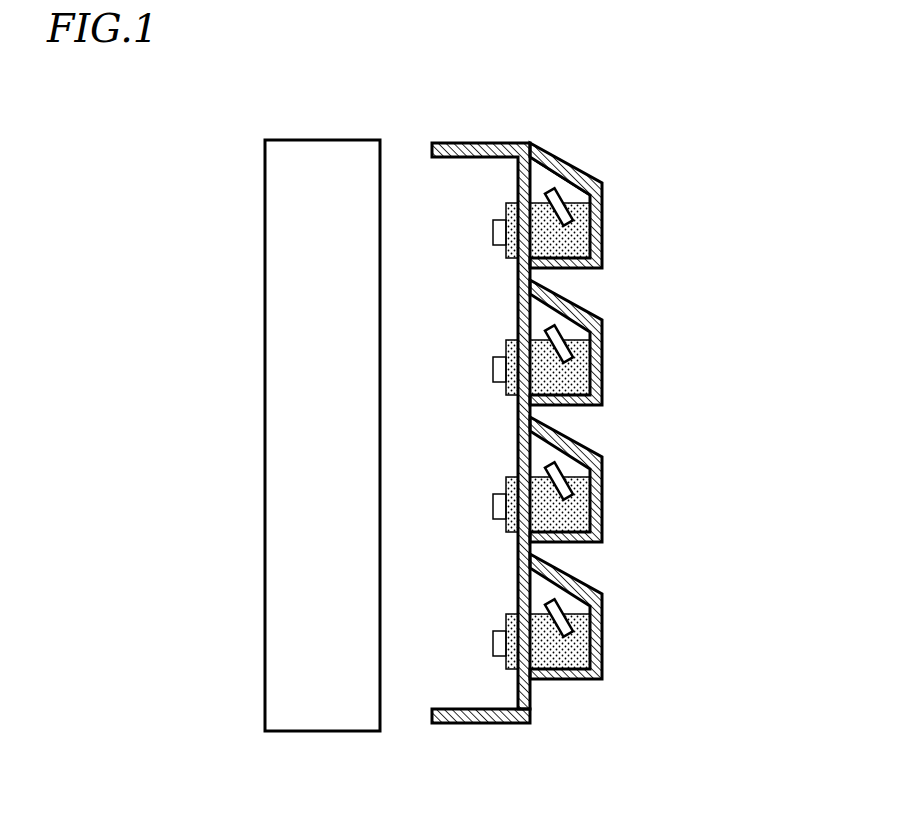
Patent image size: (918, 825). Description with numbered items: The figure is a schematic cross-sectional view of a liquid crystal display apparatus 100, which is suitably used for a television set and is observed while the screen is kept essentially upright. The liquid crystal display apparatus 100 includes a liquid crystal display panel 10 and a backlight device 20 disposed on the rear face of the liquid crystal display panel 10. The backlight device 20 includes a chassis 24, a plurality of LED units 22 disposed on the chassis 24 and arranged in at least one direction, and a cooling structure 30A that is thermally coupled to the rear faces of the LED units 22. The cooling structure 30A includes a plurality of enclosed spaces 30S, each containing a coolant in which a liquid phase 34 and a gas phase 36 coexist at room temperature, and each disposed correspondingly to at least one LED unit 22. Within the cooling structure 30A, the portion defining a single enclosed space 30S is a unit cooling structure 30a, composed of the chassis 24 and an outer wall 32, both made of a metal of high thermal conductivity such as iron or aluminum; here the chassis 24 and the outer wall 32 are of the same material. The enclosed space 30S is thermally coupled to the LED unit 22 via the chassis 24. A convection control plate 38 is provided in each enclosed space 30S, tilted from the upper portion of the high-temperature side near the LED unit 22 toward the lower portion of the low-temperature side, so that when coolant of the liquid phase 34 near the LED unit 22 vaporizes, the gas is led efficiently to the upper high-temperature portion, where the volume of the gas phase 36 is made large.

The liquid crystal display apparatus 100 is at (776, 78).
The liquid crystal display panel 10 is at (300, 140).
The backlight device 20 is at (690, 70).
The LED unit 22 is at (480, 268).
The chassis 24 is at (488, 709).
The cooling structure 30A is at (690, 128).
The unit cooling structure 30a is at (707, 153).
The enclosed space 30S is at (653, 153).
The outer wall 32 is at (595, 257).
The liquid phase 34 is at (573, 238).
The gas phase 36 is at (570, 193).
The convection control plate 38 is at (563, 191).